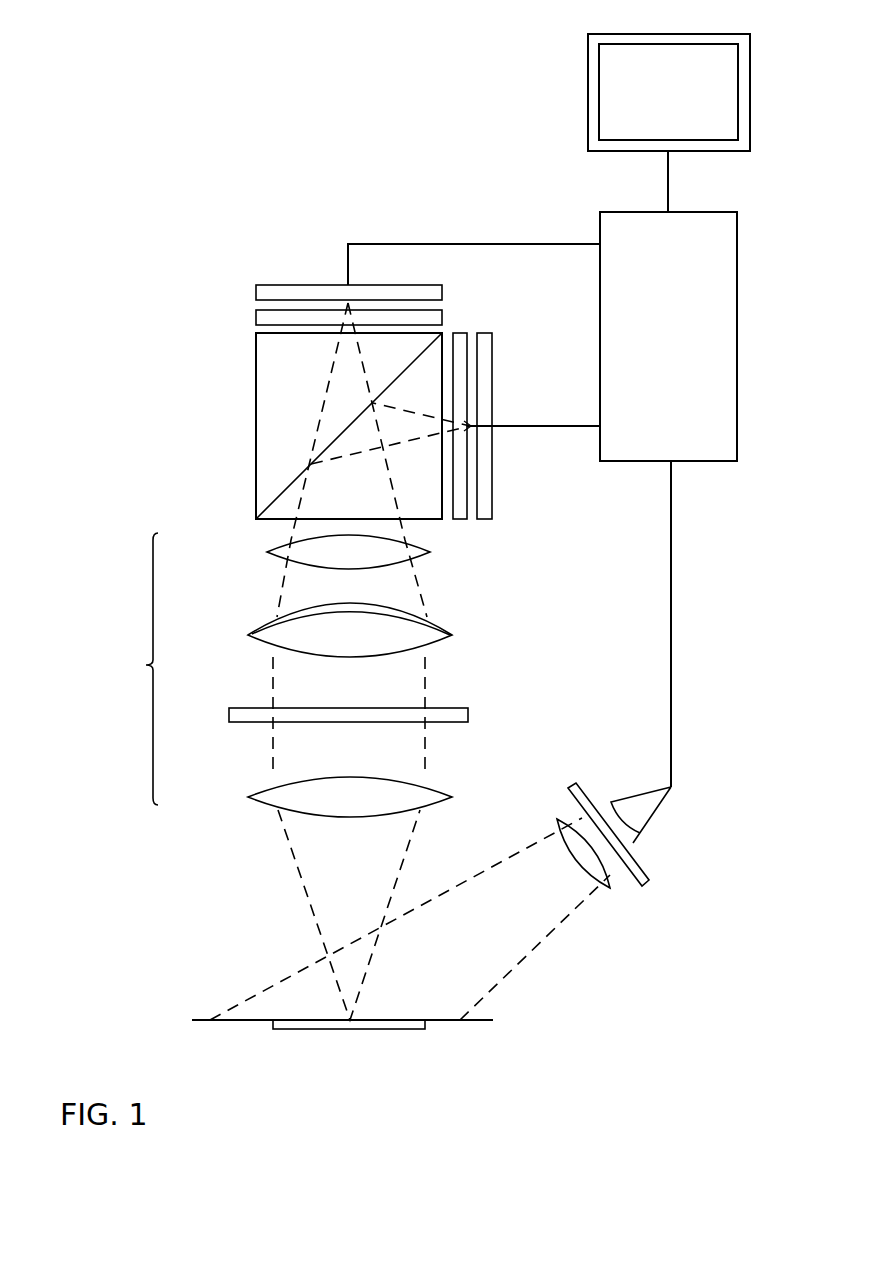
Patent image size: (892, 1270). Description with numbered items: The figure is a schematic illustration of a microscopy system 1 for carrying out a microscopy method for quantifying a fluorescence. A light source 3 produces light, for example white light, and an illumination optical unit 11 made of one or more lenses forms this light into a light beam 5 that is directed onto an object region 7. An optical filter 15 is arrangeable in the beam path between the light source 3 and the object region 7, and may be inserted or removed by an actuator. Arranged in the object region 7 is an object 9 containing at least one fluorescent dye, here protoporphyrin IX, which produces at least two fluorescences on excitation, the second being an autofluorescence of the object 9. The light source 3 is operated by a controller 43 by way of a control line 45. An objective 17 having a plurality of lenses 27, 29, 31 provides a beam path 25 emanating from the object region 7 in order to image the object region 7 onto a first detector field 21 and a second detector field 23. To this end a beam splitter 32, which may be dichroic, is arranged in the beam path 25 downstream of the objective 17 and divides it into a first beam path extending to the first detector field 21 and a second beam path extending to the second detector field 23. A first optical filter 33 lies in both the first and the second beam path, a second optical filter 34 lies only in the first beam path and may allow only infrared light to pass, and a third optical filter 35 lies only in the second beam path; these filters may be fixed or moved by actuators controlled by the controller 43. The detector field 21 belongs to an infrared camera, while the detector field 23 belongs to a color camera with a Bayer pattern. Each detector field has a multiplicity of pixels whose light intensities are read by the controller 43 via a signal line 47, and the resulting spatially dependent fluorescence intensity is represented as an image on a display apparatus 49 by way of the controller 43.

The microscopy system 1 is at (268, 80).
The light source 3 is at (662, 808).
The light beam 5 is at (553, 927).
The object region 7 is at (237, 1022).
The object 9 is at (317, 1030).
The illumination optical unit 11 is at (610, 870).
The optical filter 15 is at (648, 867).
The objective 17 is at (138, 669).
The first detector field 21 is at (492, 369).
The second detector field 23 is at (286, 285).
The beam path 25 is at (292, 857).
The lens 27 is at (248, 797).
The lens 29 is at (248, 635).
The lens 31 is at (267, 552).
The beam splitter 32 is at (256, 415).
The first optical filter 33 is at (229, 714).
The second optical filter 34 is at (455, 519).
The third optical filter 35 is at (256, 320).
The controller 43 is at (661, 353).
The control line 45 is at (671, 624).
The signal line 47 is at (517, 244).
The display apparatus 49 is at (750, 95).